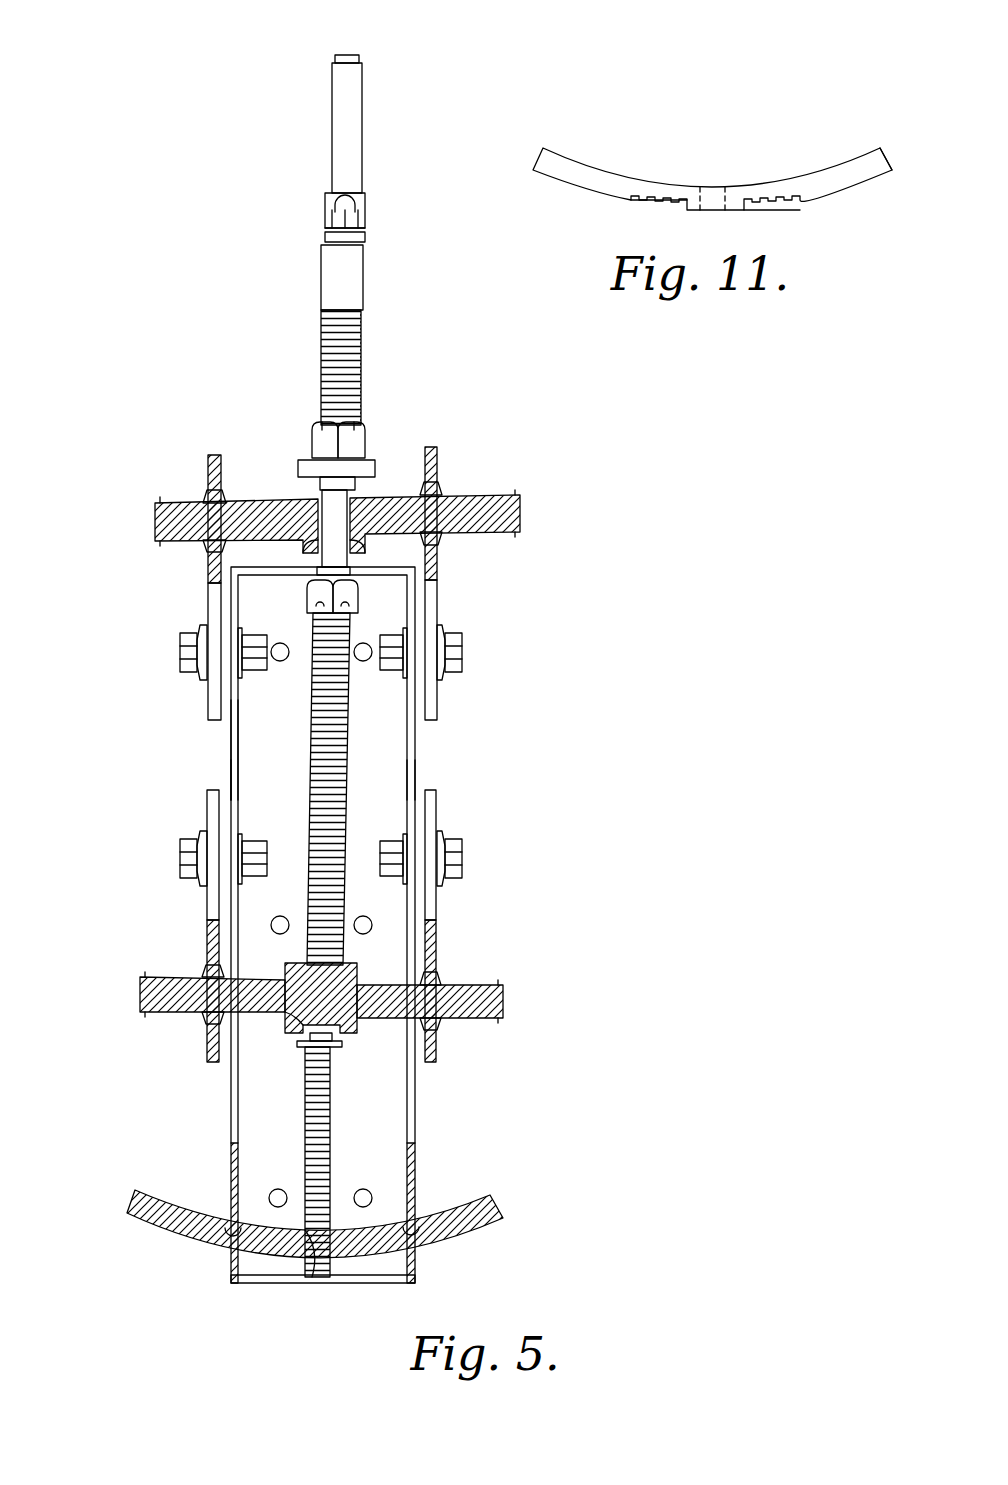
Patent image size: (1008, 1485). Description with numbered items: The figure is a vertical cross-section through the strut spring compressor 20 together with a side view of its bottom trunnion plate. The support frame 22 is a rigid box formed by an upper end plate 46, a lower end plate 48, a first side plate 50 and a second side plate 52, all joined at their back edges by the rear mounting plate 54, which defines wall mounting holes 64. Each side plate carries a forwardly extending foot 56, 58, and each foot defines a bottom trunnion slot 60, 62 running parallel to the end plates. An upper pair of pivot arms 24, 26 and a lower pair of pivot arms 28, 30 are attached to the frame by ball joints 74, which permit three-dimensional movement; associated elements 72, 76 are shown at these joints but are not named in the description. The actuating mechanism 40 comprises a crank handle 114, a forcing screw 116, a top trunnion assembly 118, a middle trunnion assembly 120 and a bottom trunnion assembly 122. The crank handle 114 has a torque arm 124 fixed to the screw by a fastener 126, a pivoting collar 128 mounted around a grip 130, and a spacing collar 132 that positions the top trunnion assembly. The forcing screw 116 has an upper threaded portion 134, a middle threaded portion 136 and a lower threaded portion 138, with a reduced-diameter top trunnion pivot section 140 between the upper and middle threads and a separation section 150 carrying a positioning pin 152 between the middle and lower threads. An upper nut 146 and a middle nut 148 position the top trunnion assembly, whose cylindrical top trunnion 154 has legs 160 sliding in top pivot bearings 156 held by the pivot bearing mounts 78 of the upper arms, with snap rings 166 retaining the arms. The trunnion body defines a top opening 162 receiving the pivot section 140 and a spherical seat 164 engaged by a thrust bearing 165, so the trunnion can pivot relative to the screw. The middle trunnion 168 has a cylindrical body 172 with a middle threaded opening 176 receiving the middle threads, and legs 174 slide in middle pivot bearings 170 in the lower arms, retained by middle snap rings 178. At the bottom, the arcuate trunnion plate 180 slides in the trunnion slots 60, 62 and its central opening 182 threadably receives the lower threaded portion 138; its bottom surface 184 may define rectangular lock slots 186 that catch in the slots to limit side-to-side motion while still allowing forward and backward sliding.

In FIG. 5, the strut spring compressor 20 is at (391, 930).
In FIG. 5, the support frame 22 is at (420, 740).
In FIG. 5, the pivot arm 24 is at (205, 608).
In FIG. 5, the pivot arm 26 is at (440, 690).
In FIG. 5, the pivot arm 28 is at (205, 815).
In FIG. 5, the pivot arm 30 is at (440, 810).
In FIG. 5, the actuating mechanism 40 is at (240, 335).
In FIG. 5, the upper end plate 46 is at (320, 930).
In FIG. 5, the lower end plate 48 is at (258, 1286).
In FIG. 5, the first side plate 50 is at (230, 777).
In FIG. 5, the second side plate 52 is at (415, 775).
In FIG. 5, the rear mounting plate 54 is at (238, 745).
In FIG. 5, the foot 56 is at (230, 1165).
In FIG. 5, the foot 58 is at (413, 1170).
In FIG. 5, the bottom trunnion slot 60 is at (230, 1225).
In FIG. 5, the bottom trunnion slot 62 is at (412, 1224).
In FIG. 5, the wall mounting holes 64 is at (280, 650).
In FIG. 5, the washer 72 is at (445, 617).
In FIG. 5, the ball joints 74 is at (405, 688).
In FIG. 5, the bolt 76 is at (464, 655).
In FIG. 5, the pivot bearing mounts 78 is at (437, 490).
In FIG. 5, the crank handle 114 is at (307, 229).
In FIG. 5, the forcing screw 116 is at (324, 789).
In FIG. 5, the top trunnion assembly 118 is at (180, 445).
In FIG. 5, the middle trunnion assembly 120 is at (505, 920).
In FIG. 5, the bottom trunnion assembly 122 is at (465, 1245).
In FIG. 5, the torque arm 124 is at (346, 212).
In FIG. 5, the fastener 126 is at (342, 208).
In FIG. 5, the pivoting collar 128 is at (356, 130).
In FIG. 5, the grip 130 is at (355, 62).
In FIG. 5, the spacing collar 132 is at (356, 278).
In FIG. 5, the upper threaded portion 134 is at (354, 330).
In FIG. 5, the middle threaded portion 136 is at (345, 780).
In FIG. 5, the lower threaded portion 138 is at (328, 1130).
In FIG. 5, the top trunnion pivot section 140 is at (340, 497).
In FIG. 5, the upper nut 146 is at (358, 432).
In FIG. 5, the middle nut 148 is at (308, 600).
In FIG. 5, the separation section 150 is at (315, 1155).
In FIG. 5, the positioning pin 152 is at (336, 1044).
In FIG. 5, the top trunnion 154 is at (341, 757).
In FIG. 5, the top pivot bearings 156 is at (210, 493).
In FIG. 5, the legs 160 is at (155, 522).
In FIG. 5, the top opening 162 is at (350, 543).
In FIG. 5, the spherical seat 164 is at (300, 468).
In FIG. 5, the thrust bearing 165 is at (310, 456).
In FIG. 5, the snap rings 166 is at (520, 497).
In FIG. 5, the middle trunnion 168 is at (347, 1001).
In FIG. 5, the middle pivot bearings 170 is at (440, 975).
In FIG. 5, the cylindrical body 172 is at (335, 985).
In FIG. 5, the legs 174 is at (140, 995).
In FIG. 5, the middle threaded opening 176 is at (292, 1026).
In FIG. 5, the middle snap rings 178 is at (503, 985).
In FIG. 5, the arcuate trunnion plate 180 is at (287, 1248).
In FIG. 11, the arcuate trunnion plate 180 is at (724, 186).
In FIG. 5, the opening 182 is at (315, 1262).
In FIG. 11, the opening 182 is at (707, 195).
In FIG. 11, the bottom surface 184 is at (855, 185).
In FIG. 11, the lock slots 186 is at (640, 205).